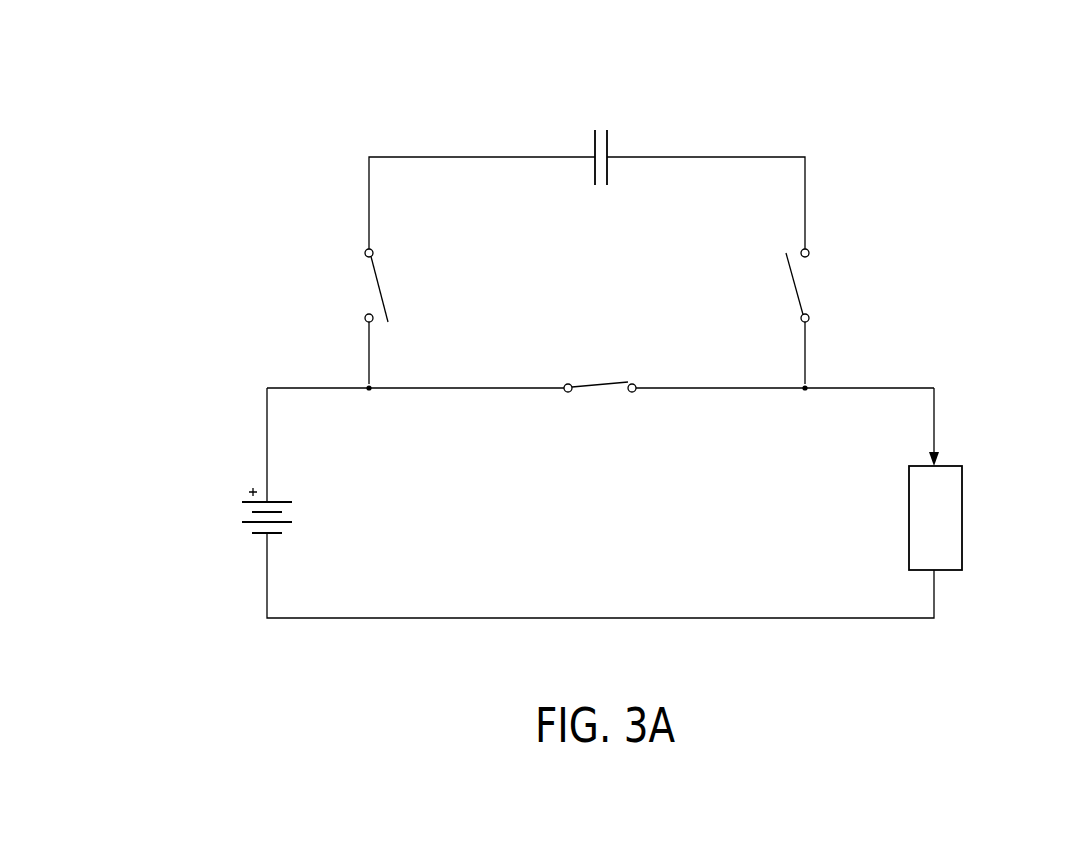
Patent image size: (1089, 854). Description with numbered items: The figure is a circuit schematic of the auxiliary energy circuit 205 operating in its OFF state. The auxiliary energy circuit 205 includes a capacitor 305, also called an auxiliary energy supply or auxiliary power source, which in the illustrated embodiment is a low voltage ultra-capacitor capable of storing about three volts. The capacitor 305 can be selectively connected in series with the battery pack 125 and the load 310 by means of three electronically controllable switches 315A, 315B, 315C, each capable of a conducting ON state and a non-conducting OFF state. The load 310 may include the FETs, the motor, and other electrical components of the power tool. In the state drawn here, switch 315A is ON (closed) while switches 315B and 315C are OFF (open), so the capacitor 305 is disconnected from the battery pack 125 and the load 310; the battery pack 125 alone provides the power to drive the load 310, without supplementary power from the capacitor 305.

The capacitor 305 is at (607, 104).
The auxiliary energy circuit 205 is at (302, 178).
The switch 315C is at (342, 279).
The switch 315B is at (845, 276).
The switch 315A is at (612, 418).
The battery pack 125 is at (207, 516).
The load 310 is at (994, 516).